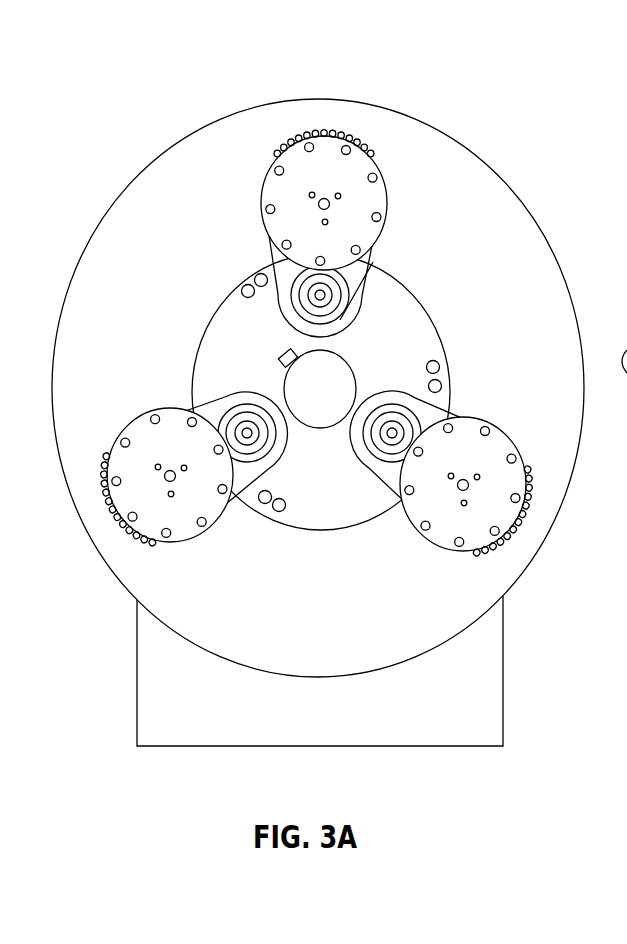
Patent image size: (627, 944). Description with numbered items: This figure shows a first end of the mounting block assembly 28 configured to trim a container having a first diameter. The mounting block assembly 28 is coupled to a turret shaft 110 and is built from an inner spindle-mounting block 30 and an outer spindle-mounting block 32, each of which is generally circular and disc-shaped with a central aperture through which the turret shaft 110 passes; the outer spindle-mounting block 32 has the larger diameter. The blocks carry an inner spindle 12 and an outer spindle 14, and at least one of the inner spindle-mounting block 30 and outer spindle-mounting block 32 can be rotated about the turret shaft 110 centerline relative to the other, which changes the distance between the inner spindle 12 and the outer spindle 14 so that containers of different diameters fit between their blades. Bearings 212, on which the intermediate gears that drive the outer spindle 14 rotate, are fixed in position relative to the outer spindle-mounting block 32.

The mounting block assembly 28 is at (586, 228).
The inner spindle-mounting block 30 is at (398, 327).
The outer spindle-mounting block 32 is at (226, 150).
The inner spindle 12 is at (247, 428).
The outer spindle 14 is at (145, 433).
The turret shaft 110 is at (320, 387).
The bearings 212 is at (467, 485).